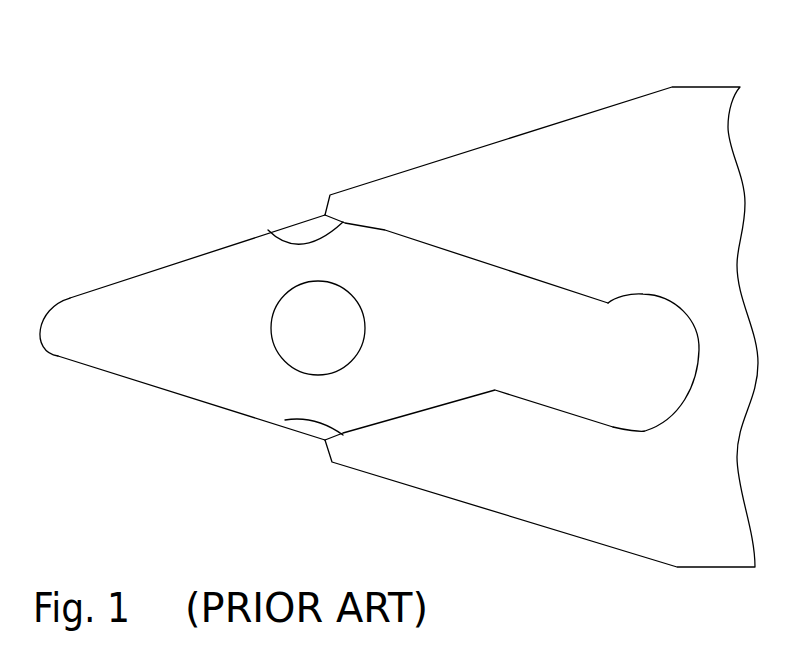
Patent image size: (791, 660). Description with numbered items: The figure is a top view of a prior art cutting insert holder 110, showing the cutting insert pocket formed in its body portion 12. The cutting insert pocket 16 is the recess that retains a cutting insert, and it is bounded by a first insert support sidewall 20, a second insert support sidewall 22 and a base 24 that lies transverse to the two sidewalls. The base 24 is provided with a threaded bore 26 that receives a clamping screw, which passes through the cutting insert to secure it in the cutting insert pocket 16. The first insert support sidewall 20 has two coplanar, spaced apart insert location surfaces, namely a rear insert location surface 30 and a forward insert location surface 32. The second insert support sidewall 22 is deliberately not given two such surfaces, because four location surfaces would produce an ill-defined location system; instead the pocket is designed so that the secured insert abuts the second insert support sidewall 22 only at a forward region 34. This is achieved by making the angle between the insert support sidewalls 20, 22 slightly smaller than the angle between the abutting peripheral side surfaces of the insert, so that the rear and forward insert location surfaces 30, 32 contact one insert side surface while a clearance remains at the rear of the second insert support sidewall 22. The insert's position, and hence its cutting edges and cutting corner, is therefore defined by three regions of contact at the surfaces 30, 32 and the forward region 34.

The cutting insert holder 110 is at (380, 106).
The body portion 12 is at (691, 110).
The cutting insert pocket 16 is at (146, 294).
The first insert support sidewall 20 is at (430, 274).
The second insert support sidewall 22 is at (419, 387).
The base 24 is at (115, 327).
The threaded bore 26 is at (292, 342).
The rear insert location surface 30 is at (583, 300).
The forward insert location surface 32 is at (270, 230).
The forward region 34 is at (285, 420).